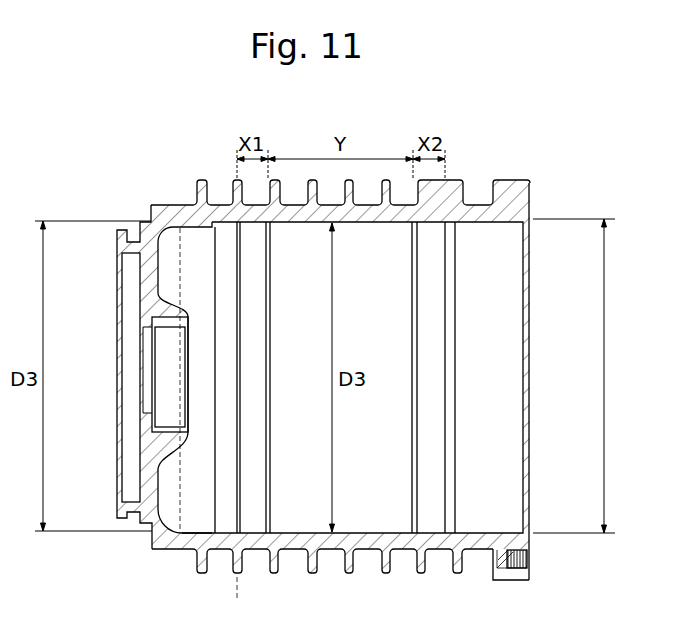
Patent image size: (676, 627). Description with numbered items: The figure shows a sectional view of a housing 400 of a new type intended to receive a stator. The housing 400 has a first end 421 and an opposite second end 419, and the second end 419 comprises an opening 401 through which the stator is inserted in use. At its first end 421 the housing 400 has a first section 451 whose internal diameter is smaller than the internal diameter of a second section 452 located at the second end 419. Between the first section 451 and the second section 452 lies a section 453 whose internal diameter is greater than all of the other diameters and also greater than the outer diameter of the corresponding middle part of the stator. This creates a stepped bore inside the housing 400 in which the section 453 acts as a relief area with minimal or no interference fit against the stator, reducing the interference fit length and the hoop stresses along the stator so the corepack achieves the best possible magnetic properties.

The housing 400 is at (165, 552).
The opening 401 is at (502, 375).
The second end 419 is at (533, 546).
The first end 421 is at (117, 515).
The first section 451 is at (237, 130).
The second section 452 is at (530, 130).
The section 453 is at (413, 130).